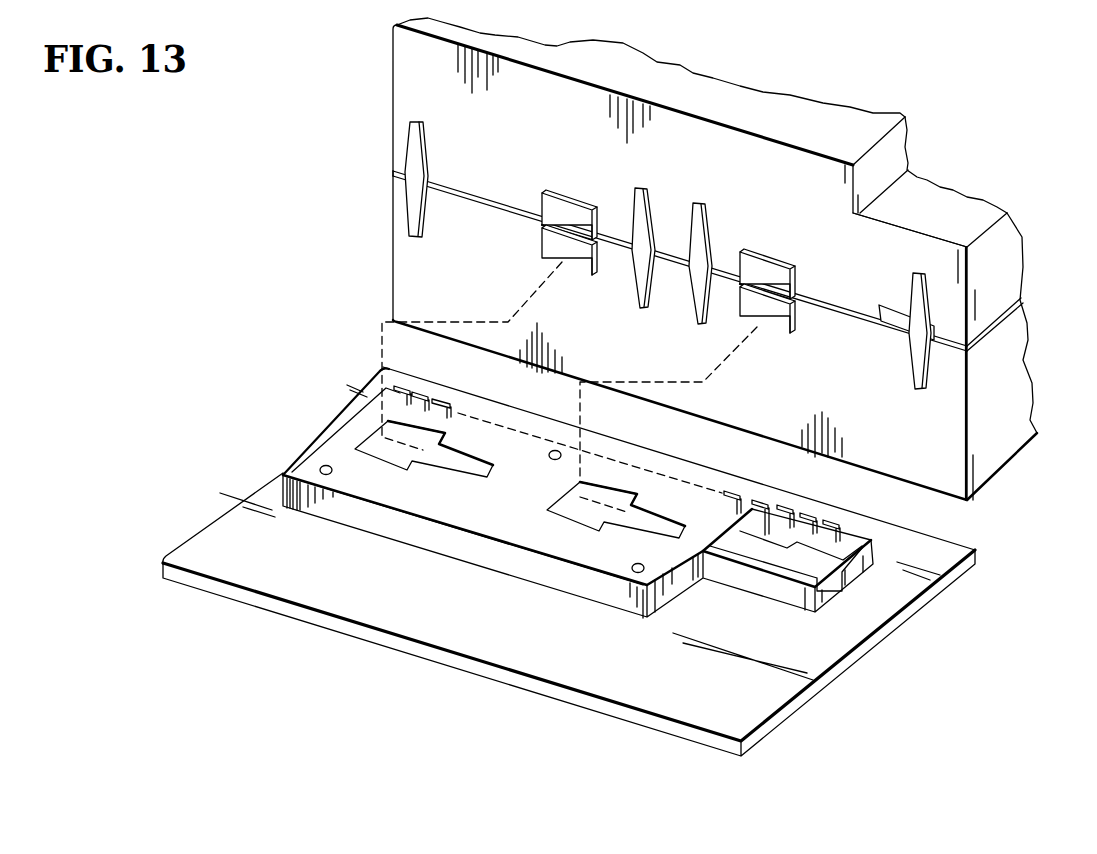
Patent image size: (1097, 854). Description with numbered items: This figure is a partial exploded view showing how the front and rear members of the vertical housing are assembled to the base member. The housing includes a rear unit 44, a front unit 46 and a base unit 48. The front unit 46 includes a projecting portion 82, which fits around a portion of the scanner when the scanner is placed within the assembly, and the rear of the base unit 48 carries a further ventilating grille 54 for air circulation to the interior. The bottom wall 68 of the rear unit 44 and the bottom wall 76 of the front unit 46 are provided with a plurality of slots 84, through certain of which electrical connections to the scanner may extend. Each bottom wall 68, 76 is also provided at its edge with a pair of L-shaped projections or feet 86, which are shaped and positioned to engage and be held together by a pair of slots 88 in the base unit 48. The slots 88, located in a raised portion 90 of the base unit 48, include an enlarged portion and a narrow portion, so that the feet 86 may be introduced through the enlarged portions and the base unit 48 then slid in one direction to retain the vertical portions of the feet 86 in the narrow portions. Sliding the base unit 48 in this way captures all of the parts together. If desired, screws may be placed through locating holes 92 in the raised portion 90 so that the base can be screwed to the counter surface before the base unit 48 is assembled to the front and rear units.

The rear unit 44 is at (1028, 357).
The front unit 46 is at (1022, 237).
The base unit 48 is at (203, 527).
The ventilating grille 54 is at (850, 523).
The bottom wall 68 is at (405, 277).
The bottom wall 76 is at (407, 76).
The projecting portion 82 is at (902, 148).
The slots 84 is at (427, 141).
The L-shaped projections or feet 86 is at (562, 200).
The slots 88 is at (453, 471).
The raised portion 90 is at (335, 428).
The locating holes 92 is at (333, 470).